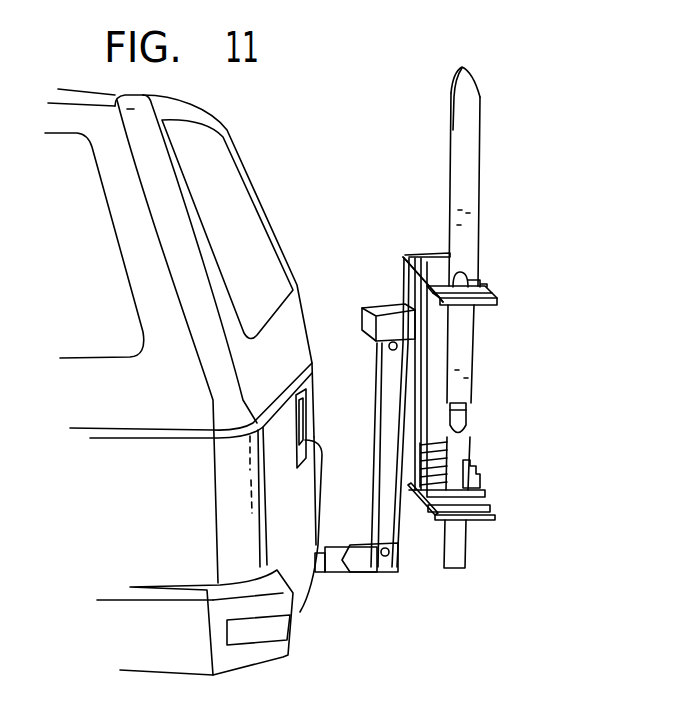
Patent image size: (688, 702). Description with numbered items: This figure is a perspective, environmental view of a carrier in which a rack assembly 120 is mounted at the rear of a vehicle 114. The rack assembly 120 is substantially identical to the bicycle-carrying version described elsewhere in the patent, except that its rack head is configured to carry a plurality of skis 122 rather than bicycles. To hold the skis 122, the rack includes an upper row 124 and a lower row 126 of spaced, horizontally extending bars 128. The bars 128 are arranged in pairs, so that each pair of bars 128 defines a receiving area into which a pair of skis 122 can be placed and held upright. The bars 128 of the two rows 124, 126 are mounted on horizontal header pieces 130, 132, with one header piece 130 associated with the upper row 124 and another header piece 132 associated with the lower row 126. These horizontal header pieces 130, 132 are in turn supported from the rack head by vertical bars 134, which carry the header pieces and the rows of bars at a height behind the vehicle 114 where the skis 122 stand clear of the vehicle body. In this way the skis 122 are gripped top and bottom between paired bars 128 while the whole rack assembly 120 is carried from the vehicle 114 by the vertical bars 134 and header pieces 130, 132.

The vehicle 114 is at (282, 198).
The rack assembly 120 is at (456, 348).
The skis 122 is at (468, 155).
The upper row 124 is at (486, 278).
The lower row 126 is at (496, 491).
The horizontally extending bars 128 is at (500, 303).
The horizontal header piece 130 is at (403, 258).
The horizontal header piece 132 is at (427, 503).
The vertical bars 134 is at (425, 398).